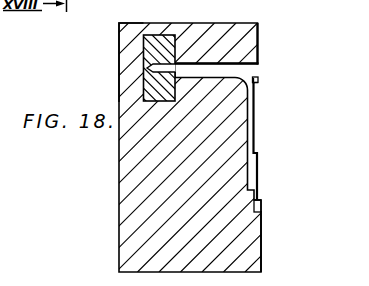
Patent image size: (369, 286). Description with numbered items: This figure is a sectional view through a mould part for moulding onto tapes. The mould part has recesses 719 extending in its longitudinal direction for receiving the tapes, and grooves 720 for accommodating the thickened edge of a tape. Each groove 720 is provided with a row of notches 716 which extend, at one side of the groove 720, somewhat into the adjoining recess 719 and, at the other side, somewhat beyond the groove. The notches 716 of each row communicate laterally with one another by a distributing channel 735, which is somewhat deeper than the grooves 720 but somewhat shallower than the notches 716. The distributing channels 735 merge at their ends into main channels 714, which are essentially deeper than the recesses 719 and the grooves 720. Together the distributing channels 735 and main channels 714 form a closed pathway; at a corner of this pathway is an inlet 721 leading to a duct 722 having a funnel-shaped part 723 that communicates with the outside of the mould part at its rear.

The main channel 714 is at (248, 133).
The notch 716 is at (257, 80).
The recess 719 is at (254, 123).
The groove 720 is at (258, 83).
The inlet 721 is at (258, 64).
The duct 722 is at (205, 69).
The funnel-shaped part 723 is at (126, 58).
The distributing channel 735 is at (259, 80).